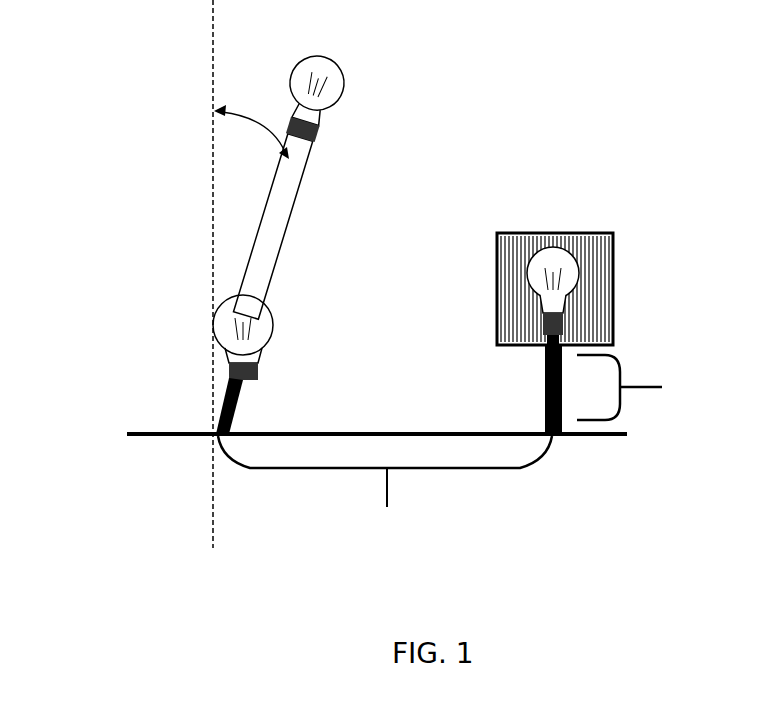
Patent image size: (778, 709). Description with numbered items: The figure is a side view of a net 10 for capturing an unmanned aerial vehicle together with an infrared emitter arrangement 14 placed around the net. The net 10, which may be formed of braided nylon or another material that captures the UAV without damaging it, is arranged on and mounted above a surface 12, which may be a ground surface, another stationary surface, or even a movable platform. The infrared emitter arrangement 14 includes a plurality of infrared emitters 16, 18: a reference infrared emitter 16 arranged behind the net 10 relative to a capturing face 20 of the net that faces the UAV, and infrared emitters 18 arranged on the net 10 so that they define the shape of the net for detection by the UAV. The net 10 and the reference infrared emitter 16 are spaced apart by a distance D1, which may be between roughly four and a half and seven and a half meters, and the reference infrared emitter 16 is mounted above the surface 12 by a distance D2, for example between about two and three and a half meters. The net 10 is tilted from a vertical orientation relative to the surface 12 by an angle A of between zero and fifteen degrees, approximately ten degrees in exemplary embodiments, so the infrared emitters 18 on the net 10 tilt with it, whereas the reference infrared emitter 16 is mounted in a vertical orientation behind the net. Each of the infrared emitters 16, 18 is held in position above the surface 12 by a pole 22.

The net 10 is at (272, 253).
The surface 12 is at (170, 433).
The infrared emitter arrangement 14 is at (207, 292).
The reference infrared emitter 16 is at (545, 268).
The infrared emitters 18 is at (213, 340).
The capturing face 20 is at (268, 199).
The pole 22 is at (545, 393).
The angle A is at (251, 122).
The distance D1 is at (385, 496).
The distance D2 is at (651, 387).